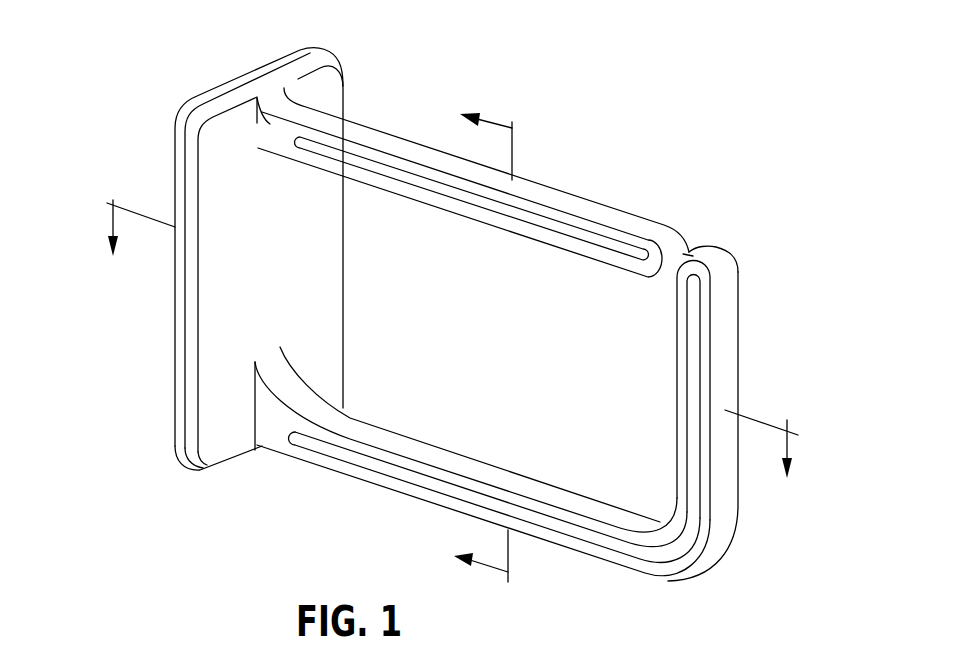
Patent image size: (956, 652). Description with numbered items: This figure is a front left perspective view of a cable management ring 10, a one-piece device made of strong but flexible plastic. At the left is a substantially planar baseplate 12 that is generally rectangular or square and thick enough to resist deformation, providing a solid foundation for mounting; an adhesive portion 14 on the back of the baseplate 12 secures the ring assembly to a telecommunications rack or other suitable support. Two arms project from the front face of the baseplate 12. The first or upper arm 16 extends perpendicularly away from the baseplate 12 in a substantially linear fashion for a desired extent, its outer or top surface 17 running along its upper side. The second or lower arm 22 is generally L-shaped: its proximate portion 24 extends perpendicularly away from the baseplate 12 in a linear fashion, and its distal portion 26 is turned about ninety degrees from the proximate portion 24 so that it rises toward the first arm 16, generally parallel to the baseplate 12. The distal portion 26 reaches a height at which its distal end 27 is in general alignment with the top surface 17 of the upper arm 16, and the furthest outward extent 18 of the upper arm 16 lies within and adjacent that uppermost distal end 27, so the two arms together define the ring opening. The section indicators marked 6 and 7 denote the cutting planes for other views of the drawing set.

The cable management ring 10 is at (454, 300).
The baseplate 12 is at (202, 310).
The adhesive portion 14 is at (178, 383).
The first arm 16 is at (576, 188).
The top surface 17 is at (395, 137).
The furthest outward extent 18 is at (693, 256).
The second arm 22 is at (357, 492).
The proximate portion 24 is at (485, 462).
The distal portion 26 is at (757, 372).
The distal end 27 is at (714, 249).
The section line 6- 6 is at (451, 355).
The section line 7- 7 is at (472, 340).